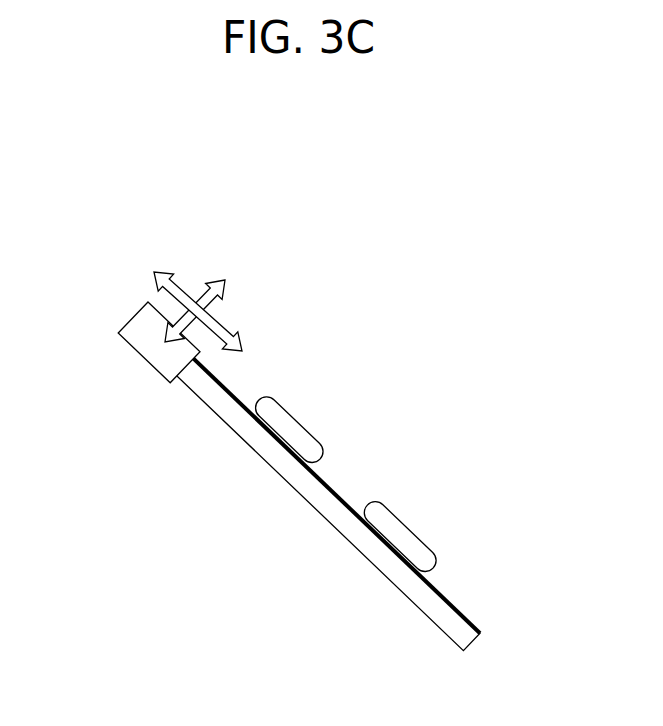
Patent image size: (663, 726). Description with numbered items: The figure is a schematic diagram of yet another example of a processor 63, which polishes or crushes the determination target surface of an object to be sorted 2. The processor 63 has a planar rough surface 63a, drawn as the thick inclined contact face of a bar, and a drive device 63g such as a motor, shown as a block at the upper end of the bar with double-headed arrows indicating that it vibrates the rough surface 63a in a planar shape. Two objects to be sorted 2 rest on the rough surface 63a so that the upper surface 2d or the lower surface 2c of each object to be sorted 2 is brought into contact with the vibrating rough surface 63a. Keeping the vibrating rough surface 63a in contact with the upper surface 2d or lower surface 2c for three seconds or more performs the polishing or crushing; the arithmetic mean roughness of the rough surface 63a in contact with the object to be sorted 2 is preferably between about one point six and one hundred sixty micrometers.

The processor 63 is at (260, 243).
The rough surface 63a is at (345, 499).
The drive device 63g is at (167, 358).
The object to be sorted 2 is at (295, 418).
The lower surface 2c is at (390, 548).
The upper surface 2d is at (318, 448).